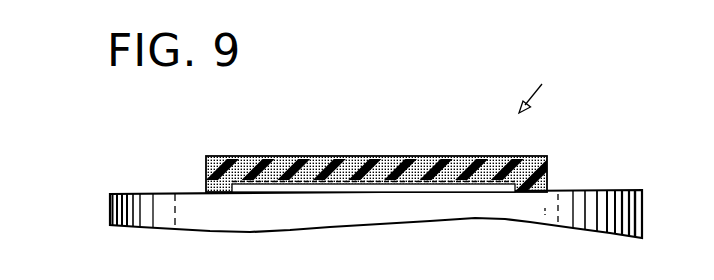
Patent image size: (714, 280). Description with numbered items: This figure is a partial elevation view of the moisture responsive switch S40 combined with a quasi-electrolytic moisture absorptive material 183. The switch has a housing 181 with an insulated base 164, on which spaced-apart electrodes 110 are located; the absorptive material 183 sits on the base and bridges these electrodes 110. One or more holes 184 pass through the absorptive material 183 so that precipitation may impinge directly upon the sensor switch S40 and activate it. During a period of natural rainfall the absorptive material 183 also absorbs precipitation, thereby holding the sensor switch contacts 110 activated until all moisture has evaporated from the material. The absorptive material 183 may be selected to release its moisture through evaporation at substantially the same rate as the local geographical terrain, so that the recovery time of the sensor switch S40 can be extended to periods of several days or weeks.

The housing 181 is at (641, 201).
The quasi-electrolytic moisture absorptive material 183 is at (530, 157).
The holes in absorptive material 184 is at (372, 157).
The insulated base 164 is at (435, 187).
The spaced-apart electrodes 110 is at (296, 181).
The moisture responsive switch S40 is at (543, 91).